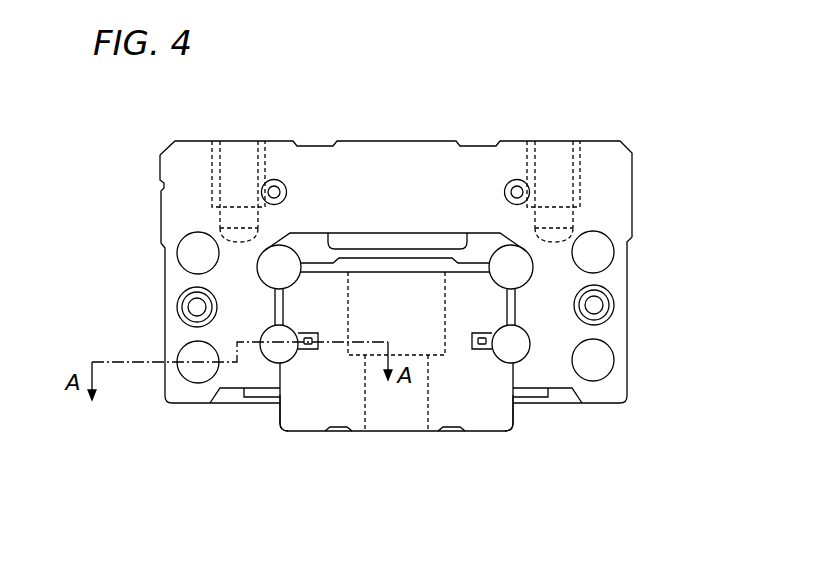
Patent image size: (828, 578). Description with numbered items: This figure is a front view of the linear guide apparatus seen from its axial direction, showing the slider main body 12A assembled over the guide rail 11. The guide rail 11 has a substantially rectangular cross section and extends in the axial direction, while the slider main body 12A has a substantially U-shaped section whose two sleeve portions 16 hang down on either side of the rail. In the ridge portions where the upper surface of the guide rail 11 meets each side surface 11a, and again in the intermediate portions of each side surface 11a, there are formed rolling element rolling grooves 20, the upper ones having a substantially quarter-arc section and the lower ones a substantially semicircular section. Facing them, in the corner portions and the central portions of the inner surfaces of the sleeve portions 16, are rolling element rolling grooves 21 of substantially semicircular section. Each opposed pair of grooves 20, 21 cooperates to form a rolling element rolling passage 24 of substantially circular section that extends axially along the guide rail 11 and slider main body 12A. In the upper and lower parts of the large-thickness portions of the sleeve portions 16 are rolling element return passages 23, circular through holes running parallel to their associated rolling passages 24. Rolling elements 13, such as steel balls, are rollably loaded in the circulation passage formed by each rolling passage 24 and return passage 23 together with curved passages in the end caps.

The slider main body 12A is at (570, 113).
The guide rail 11 is at (407, 417).
The side surface of the guide rail 11a is at (273, 418).
The rolling element 13 is at (518, 327).
The sleeve portion 16 is at (612, 330).
The rolling element rolling groove 20 is at (531, 277).
The rolling element rolling groove 21 is at (527, 272).
The rolling element return passage 23 is at (197, 248).
The rolling element rolling passage 24 is at (460, 362).